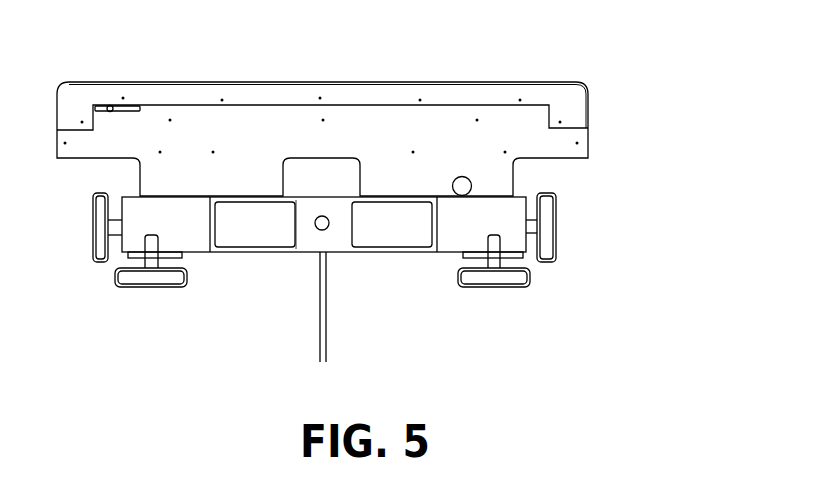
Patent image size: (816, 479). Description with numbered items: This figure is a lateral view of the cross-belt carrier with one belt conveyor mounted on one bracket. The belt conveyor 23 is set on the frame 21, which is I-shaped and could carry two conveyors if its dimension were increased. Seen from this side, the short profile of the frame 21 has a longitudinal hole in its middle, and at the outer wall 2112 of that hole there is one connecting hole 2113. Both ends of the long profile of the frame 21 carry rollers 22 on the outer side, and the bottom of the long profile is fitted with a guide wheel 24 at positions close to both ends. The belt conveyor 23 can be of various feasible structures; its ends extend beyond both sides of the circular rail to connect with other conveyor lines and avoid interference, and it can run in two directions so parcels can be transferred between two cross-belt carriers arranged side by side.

The frame 21 is at (497, 217).
The rollers 22 is at (553, 230).
The belt conveyor 23 is at (402, 120).
The guide wheel 24 is at (497, 277).
The outer wall 2112 is at (305, 240).
The connecting hole 2113 is at (330, 229).